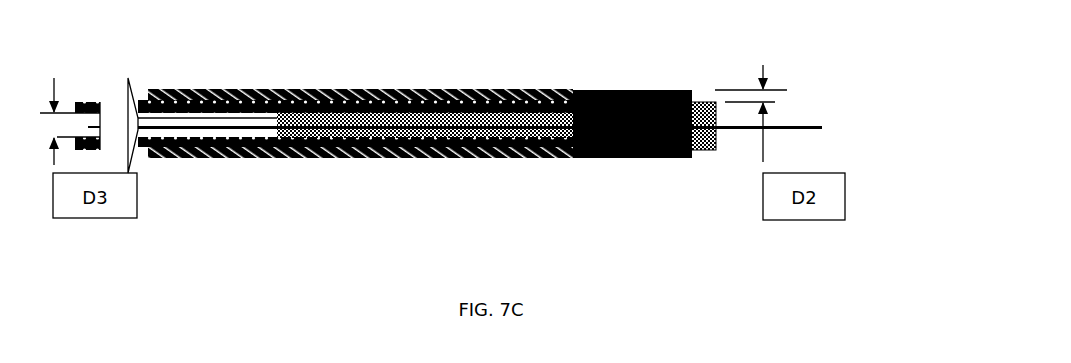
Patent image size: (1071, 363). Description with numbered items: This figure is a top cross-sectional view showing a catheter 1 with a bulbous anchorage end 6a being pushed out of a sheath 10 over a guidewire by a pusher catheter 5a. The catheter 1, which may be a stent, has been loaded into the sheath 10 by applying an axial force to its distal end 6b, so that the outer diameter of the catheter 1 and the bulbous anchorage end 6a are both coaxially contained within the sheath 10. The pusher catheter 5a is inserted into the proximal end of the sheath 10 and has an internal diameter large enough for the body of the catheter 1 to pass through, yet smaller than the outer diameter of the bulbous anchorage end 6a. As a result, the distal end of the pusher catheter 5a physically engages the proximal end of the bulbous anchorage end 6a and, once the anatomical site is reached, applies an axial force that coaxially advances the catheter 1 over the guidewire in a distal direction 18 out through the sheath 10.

The catheter 1 is at (472, 133).
The pusher catheter 5a is at (298, 158).
The bulbous anchorage end 6a is at (703, 151).
The distal end 6b is at (719, 140).
The sheath 10 is at (245, 160).
The distal direction 18 is at (112, 98).